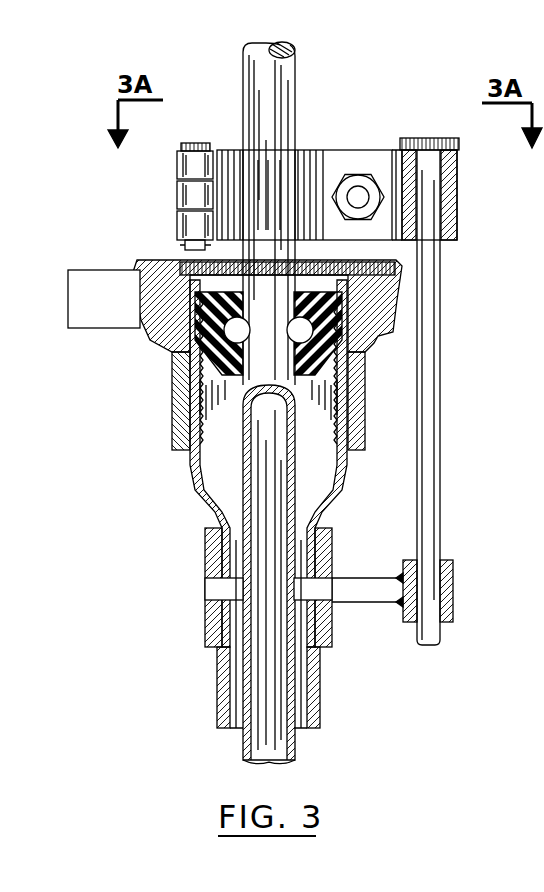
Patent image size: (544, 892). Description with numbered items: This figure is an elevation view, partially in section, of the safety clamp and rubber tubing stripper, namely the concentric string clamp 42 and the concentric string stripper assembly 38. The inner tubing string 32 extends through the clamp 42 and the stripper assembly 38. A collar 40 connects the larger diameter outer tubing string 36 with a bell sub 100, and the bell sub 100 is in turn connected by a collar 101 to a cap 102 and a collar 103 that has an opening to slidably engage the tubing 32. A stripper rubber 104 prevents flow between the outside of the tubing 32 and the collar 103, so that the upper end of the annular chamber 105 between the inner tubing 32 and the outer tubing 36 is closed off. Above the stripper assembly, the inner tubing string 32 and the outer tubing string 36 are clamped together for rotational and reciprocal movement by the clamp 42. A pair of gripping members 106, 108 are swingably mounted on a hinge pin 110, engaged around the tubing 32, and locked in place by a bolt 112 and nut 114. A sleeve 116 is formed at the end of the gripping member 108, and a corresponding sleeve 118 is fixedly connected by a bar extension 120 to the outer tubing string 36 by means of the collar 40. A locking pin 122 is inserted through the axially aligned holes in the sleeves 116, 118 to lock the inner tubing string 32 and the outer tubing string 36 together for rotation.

The inner tubing string 32 is at (245, 63).
The outer tubing string 36 is at (318, 700).
The concentric string stripper assembly 38 is at (223, 429).
The collar 40 is at (205, 597).
The concentric string clamp 42 is at (296, 143).
The bell sub 100 is at (197, 487).
The collar 101 is at (172, 405).
The cap 102 is at (138, 262).
The collar 103 is at (180, 262).
The stripper rubber 104 is at (227, 365).
The annular chamber 105 is at (237, 618).
The gripping member 106 is at (156, 183).
The gripping member 108 is at (232, 148).
The hinge pin 110 is at (197, 145).
The bolt 112 is at (363, 192).
The nut 114 is at (379, 150).
The sleeve 116 is at (457, 178).
The sleeve 118 is at (452, 603).
The bar extension 120 is at (362, 575).
The locking pin 122 is at (441, 392).